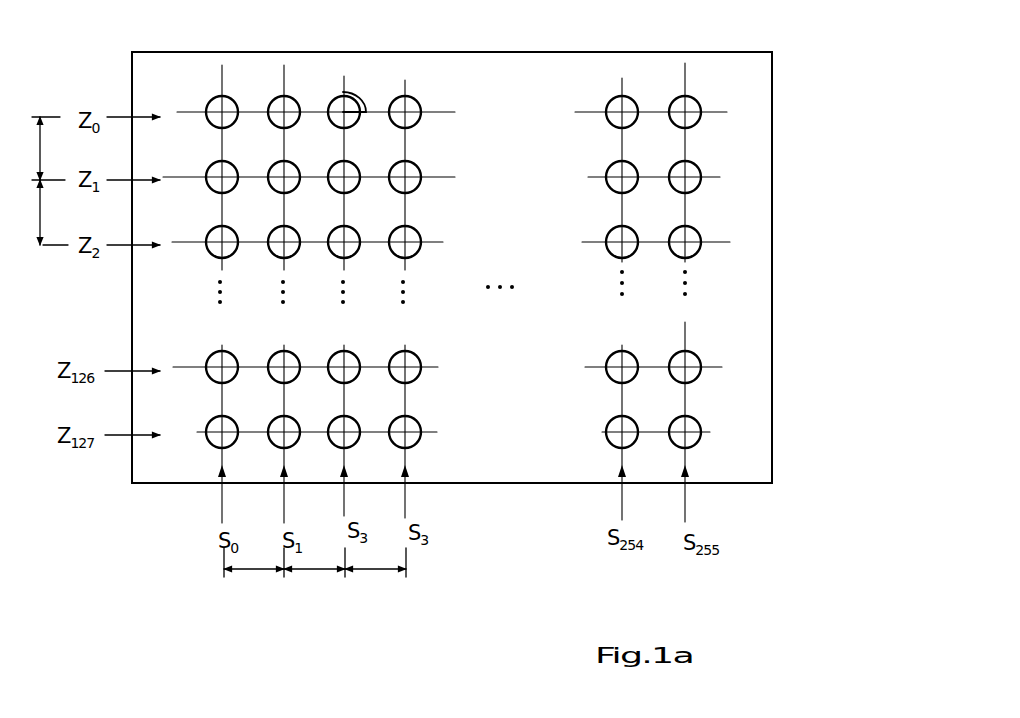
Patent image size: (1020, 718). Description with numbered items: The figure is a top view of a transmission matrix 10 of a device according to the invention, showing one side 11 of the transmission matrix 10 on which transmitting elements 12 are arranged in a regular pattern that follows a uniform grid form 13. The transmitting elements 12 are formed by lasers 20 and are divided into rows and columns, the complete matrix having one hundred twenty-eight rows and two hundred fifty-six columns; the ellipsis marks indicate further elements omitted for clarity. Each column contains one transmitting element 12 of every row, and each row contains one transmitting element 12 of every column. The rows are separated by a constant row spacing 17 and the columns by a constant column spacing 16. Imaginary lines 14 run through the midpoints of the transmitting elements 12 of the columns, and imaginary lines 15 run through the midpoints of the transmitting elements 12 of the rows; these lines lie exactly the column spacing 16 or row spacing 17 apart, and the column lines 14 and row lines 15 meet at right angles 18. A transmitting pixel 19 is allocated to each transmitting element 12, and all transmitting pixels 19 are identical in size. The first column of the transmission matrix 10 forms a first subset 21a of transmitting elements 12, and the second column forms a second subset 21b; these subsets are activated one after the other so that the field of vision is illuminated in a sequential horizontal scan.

The transmission matrix 10 is at (778, 120).
The side 11 is at (490, 86).
The transmitting elements 12 is at (212, 118).
The uniform grid form 13 is at (598, 448).
The imaginary lines of the columns 14 is at (220, 82).
The imaginary lines of the rows 15 is at (190, 110).
The column spacing 16 is at (256, 572).
The row spacing 17 is at (40, 142).
The right angles 18 is at (357, 93).
The transmitting pixel 19 is at (418, 186).
The lasers 20 is at (624, 105).
The first subset of transmitting elements 21a is at (198, 472).
The second subset of transmitting elements 21b is at (300, 450).